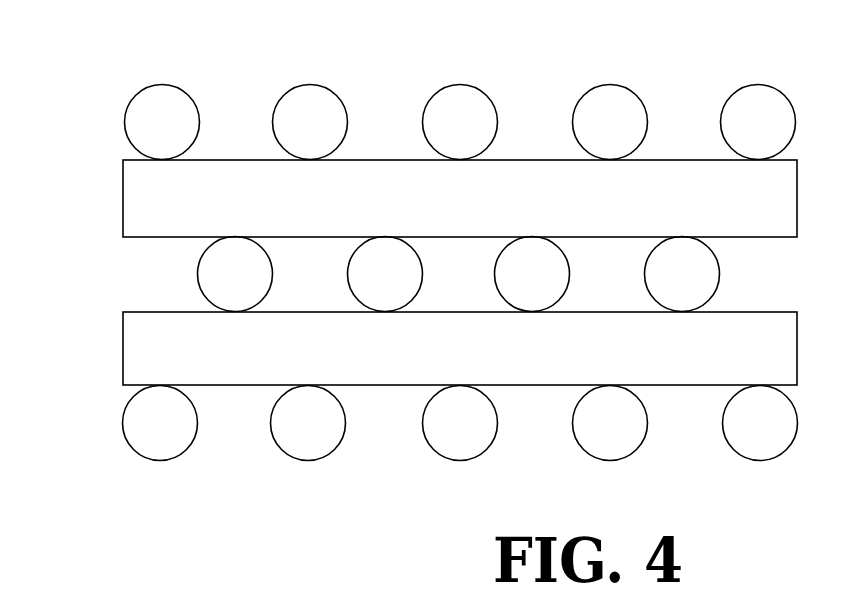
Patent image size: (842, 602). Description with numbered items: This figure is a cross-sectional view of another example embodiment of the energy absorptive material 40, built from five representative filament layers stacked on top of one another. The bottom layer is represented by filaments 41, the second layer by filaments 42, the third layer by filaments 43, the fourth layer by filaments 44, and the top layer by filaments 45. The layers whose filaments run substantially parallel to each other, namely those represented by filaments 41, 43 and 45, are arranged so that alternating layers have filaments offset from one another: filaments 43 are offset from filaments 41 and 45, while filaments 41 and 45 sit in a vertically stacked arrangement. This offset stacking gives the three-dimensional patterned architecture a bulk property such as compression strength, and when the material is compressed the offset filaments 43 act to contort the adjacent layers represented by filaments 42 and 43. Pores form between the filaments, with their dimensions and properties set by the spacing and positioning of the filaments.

The energy absorptive material 40 is at (683, 65).
The filaments of the first layer 41 is at (290, 455).
The filaments of the second layer 42 is at (122, 355).
The filaments of the third layer 43 is at (252, 283).
The filaments of the fourth layer 44 is at (122, 210).
The filaments of the fifth layer 45 is at (290, 90).